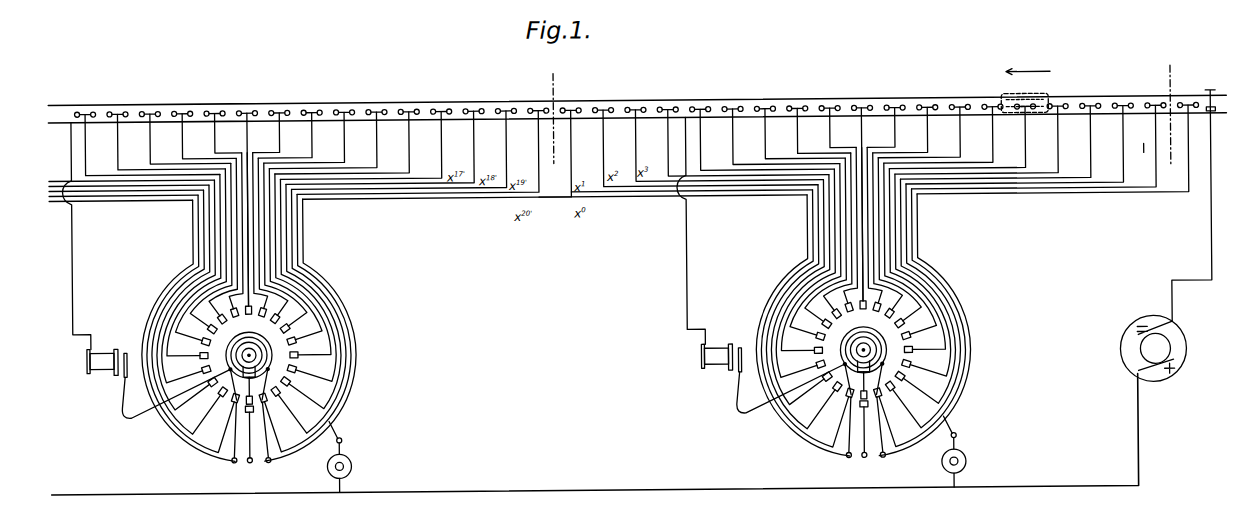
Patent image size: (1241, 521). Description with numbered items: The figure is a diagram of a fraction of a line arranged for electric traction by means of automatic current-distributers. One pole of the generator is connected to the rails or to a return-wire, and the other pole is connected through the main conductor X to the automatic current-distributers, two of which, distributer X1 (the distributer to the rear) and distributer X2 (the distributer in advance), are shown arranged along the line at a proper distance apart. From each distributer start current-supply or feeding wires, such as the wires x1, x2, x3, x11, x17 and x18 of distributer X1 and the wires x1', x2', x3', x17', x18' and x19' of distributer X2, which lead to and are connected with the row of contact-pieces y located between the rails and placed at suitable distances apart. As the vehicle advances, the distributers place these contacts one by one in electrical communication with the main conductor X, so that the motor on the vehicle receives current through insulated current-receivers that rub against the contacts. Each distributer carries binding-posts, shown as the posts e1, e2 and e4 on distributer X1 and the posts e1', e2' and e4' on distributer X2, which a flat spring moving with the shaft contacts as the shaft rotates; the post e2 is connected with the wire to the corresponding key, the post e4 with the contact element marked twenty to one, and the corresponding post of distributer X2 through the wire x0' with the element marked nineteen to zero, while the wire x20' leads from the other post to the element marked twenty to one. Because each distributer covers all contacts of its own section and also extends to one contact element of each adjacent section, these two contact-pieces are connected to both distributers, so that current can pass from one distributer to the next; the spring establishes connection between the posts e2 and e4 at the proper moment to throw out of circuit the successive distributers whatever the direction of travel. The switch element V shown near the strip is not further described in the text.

The contact-pieces y is at (637, 109).
The battery / relay V is at (1109, 225).
The main conductor X is at (595, 434).
The automatic current-distributer No. I X1 is at (864, 298).
The automatic current-distributer No. II X2 is at (311, 302).
The feeding wire x1 is at (792, 446).
The feeding wire x2 is at (768, 440).
The feeding wire x3 is at (744, 424).
The feeding wire x11 is at (894, 435).
The feeding wire x17 is at (984, 377).
The feeding wire x18 is at (984, 399).
The binding-post e1 is at (846, 435).
The binding-post e2 is at (869, 439).
The binding-post e4 is at (888, 435).
The feeding wire x1' is at (177, 452).
The feeding wire x2' is at (153, 445).
The feeding wire x3' is at (130, 429).
The wire to contact element 19 to 0 x0' is at (203, 470).
The feeding wire x19' is at (322, 445).
The wire to contact element 20 to 1 x20' is at (304, 467).
The feeding wire x17' is at (370, 382).
The feeding wire x18' is at (370, 404).
The binding-post e1' is at (232, 440).
The binding-post e2' is at (256, 444).
The binding-post e4' is at (273, 440).